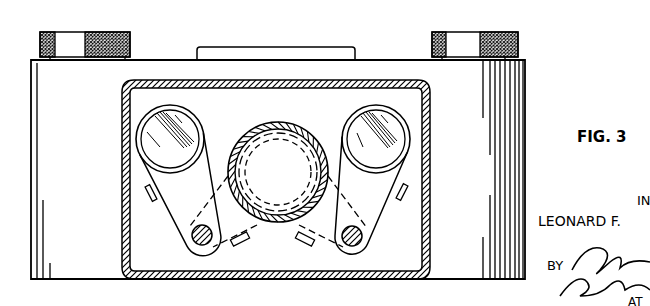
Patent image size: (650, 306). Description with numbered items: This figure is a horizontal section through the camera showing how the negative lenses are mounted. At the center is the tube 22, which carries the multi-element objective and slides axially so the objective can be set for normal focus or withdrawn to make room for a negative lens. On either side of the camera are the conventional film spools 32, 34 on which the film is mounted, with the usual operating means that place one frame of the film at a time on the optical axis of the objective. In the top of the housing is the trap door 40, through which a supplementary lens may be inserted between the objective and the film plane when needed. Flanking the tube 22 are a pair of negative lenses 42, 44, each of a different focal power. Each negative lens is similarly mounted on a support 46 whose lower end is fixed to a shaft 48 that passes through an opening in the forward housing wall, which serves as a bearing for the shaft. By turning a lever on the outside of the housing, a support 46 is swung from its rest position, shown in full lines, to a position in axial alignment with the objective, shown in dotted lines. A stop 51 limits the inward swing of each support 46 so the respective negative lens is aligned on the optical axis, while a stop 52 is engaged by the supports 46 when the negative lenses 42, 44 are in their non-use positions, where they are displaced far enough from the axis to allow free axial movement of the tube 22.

The tube 22 is at (262, 128).
The film spool 32 is at (73, 38).
The film spool 34 is at (507, 33).
The trap door 40 is at (305, 47).
The negative lens 42 is at (138, 137).
The negative lens 44 is at (410, 128).
The support 46 is at (176, 222).
The shaft 48 is at (192, 243).
The stop 51 is at (248, 245).
The stop 52 is at (147, 195).